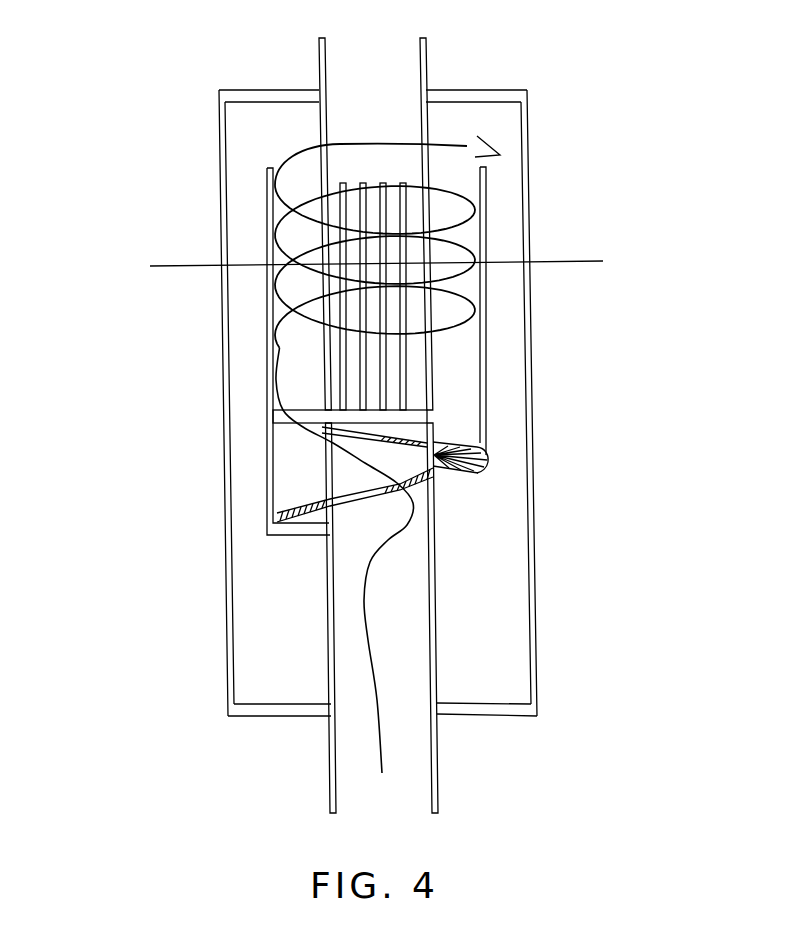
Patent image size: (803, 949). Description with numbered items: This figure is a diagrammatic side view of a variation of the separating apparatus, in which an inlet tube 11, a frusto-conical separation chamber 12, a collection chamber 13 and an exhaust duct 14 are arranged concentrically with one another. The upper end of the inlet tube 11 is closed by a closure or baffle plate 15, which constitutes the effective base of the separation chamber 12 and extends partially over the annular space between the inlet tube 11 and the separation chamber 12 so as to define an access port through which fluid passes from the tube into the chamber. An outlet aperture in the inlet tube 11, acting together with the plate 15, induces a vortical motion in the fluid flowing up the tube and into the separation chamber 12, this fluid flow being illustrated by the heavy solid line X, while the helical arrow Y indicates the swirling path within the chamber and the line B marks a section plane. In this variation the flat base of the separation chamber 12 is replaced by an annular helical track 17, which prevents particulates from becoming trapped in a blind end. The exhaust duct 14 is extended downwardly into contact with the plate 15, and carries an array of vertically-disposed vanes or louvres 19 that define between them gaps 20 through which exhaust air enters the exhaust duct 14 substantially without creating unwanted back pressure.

The inlet tube 11 is at (437, 768).
The frusto-conical separation chamber 12 is at (487, 297).
The collection chamber 13 is at (485, 617).
The exhaust duct 14 is at (425, 53).
The closure or baffle plate 15 is at (477, 447).
The annular helical track 17 is at (478, 473).
The vertically-disposed vanes or louvres 19 is at (395, 360).
The gaps or slots 20 is at (343, 362).
The fluid flow line X is at (378, 670).
The flow direction Y is at (468, 147).
The section line B- B is at (367, 250).